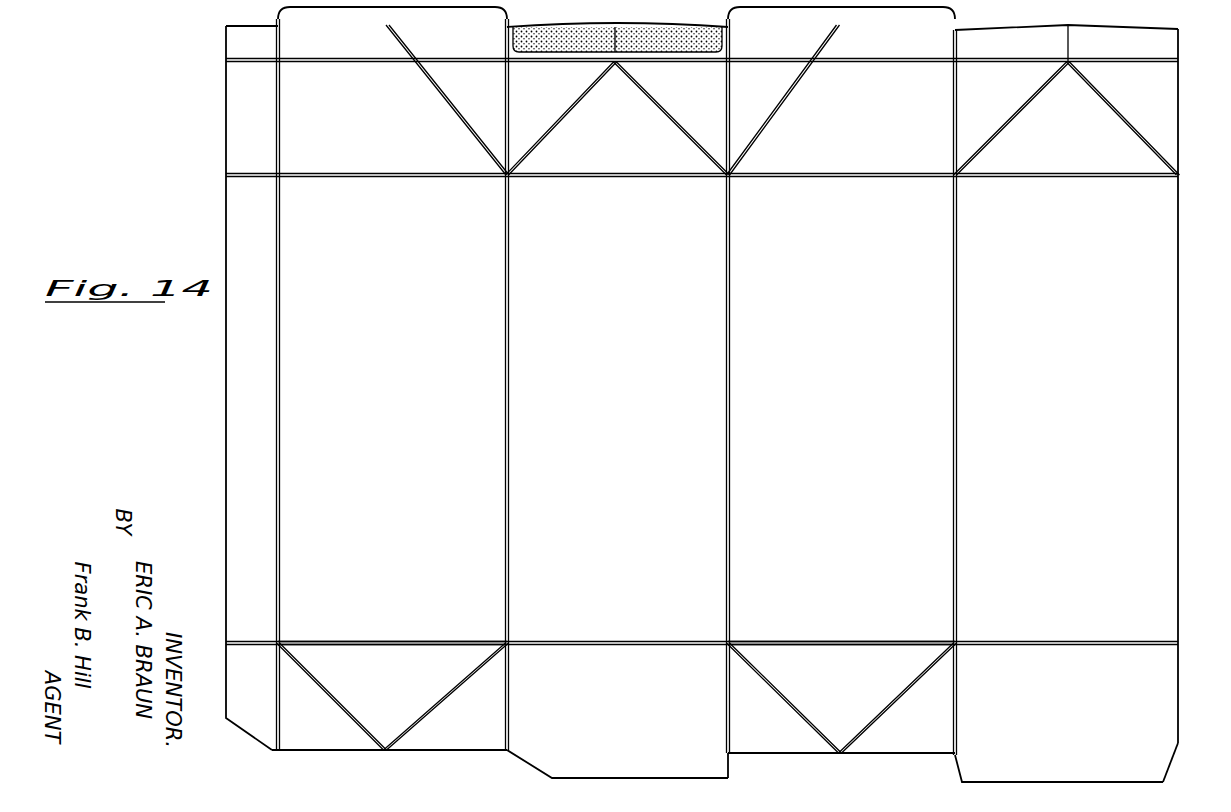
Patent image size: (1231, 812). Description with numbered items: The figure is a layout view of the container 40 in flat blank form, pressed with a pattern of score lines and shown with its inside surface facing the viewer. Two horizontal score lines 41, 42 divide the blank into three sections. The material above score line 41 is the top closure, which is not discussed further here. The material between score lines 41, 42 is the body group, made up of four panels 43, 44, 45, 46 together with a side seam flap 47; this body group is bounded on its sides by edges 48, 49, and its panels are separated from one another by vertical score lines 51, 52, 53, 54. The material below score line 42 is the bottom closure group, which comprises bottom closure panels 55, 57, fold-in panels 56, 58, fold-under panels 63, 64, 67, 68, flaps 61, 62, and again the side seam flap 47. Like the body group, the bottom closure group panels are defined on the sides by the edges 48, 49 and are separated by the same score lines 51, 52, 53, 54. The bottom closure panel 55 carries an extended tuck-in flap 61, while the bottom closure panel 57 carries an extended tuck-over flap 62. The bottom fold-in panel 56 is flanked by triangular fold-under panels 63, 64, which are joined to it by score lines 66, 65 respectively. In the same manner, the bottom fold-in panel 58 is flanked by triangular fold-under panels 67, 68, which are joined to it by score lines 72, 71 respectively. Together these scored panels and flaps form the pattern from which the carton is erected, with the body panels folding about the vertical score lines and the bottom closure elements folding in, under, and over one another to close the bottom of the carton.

The container 40 is at (214, 212).
The score line 41 is at (378, 177).
The score line 42 is at (424, 643).
The panel 43 is at (1082, 461).
The panel 44 is at (853, 459).
The panel 45 is at (618, 453).
The panel 46 is at (298, 445).
The side seam flap 47 is at (237, 418).
The edge 48 is at (1178, 367).
The edge 49 is at (224, 372).
The score line 51 is at (956, 315).
The score line 52 is at (728, 312).
The score line 53 is at (506, 305).
The score line 54 is at (278, 303).
The bottom closure panel 55 is at (1131, 699).
The fold-in panel 56 is at (848, 716).
The bottom closure panel 57 is at (570, 737).
The fold-in panel 58 is at (383, 706).
The tuck-in flap 61 is at (1154, 764).
The tuck-over flap 62 is at (718, 763).
The fold-under panel 63 is at (912, 722).
The fold-under panel 64 is at (788, 734).
The score line 65 is at (767, 682).
The score line 66 is at (913, 677).
The fold-under panel 67 is at (465, 720).
The fold-under panel 68 is at (307, 732).
The score line 71 is at (310, 676).
The score line 72 is at (462, 678).